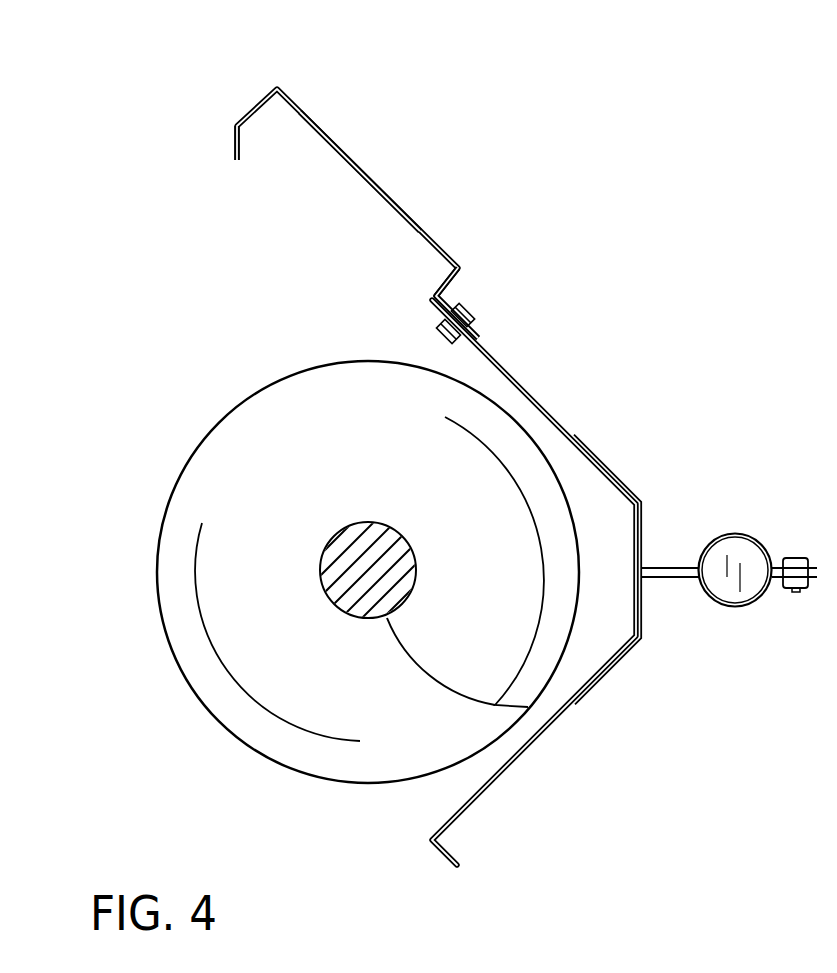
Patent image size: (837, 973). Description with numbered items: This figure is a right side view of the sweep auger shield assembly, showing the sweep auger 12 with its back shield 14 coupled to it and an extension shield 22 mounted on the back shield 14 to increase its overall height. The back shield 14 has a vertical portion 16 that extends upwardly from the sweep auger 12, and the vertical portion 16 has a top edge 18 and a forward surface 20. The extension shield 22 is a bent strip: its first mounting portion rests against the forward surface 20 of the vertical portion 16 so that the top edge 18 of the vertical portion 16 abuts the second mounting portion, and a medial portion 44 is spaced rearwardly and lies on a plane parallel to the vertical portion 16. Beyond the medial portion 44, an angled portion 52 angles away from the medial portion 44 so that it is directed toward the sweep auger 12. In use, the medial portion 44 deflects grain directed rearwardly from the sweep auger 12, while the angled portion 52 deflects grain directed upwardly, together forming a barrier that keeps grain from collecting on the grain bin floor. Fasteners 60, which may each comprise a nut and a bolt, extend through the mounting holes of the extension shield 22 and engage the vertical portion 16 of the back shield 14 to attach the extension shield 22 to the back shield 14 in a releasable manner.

The sweep auger 12 is at (212, 430).
The back shield 14 is at (554, 422).
The vertical portion 16 is at (526, 364).
The top edge 18 is at (430, 300).
The forward surface 20 is at (445, 333).
The extension shield 22 is at (285, 174).
The medial portion 44 is at (340, 175).
The angled portion 52 is at (214, 145).
The fasteners 60 is at (472, 308).